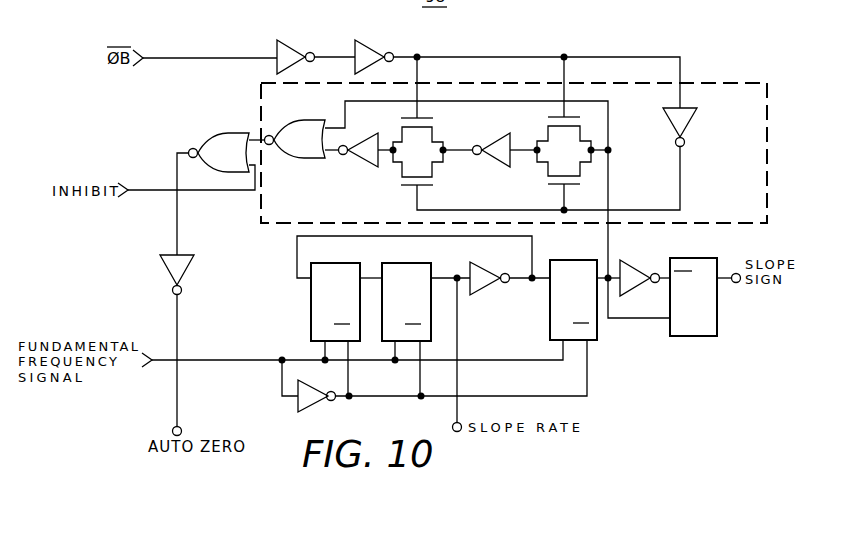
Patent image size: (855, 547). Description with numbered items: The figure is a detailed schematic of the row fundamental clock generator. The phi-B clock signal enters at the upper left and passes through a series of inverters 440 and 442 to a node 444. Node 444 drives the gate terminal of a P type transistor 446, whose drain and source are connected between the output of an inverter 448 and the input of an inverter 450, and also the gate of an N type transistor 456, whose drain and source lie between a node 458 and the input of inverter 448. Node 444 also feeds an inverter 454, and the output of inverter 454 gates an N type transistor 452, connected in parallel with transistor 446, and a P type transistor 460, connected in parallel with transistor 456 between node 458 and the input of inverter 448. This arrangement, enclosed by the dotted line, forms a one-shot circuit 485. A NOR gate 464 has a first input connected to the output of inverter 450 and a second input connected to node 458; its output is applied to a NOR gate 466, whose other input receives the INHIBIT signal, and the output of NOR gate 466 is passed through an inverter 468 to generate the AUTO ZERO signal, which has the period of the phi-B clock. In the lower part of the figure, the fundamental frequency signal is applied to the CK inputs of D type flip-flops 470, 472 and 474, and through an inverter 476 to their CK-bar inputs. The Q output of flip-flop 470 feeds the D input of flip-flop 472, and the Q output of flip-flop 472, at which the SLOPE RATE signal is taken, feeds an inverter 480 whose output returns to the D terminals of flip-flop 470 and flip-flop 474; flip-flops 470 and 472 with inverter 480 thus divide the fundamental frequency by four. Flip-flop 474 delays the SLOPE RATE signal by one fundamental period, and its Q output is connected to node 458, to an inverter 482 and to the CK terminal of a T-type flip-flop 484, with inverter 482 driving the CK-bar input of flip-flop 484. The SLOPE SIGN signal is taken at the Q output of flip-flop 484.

The inverter 440 is at (292, 48).
The inverter 442 is at (367, 48).
The node 444 is at (604, 54).
The P type transistor 446 is at (434, 122).
The inverter 448 is at (497, 140).
The inverter 450 is at (364, 153).
The N type transistor 452 is at (455, 184).
The inverter 454 is at (688, 116).
The N type transistor 456 is at (581, 120).
The node 458 is at (609, 151).
The P type transistor 460 is at (550, 183).
The NOR gate 464 is at (305, 140).
The NOR gate 466 is at (225, 155).
The inverter 468 is at (182, 268).
The D type flip-flop 470 is at (322, 303).
The D type flip-flop 472 is at (407, 288).
The D type flip-flop 474 is at (551, 302).
The inverter 476 is at (318, 394).
The inverter 480 is at (484, 276).
The inverter 482 is at (633, 265).
The T-type flip-flop 484 is at (700, 259).
The one-shot circuit 485 is at (468, 82).